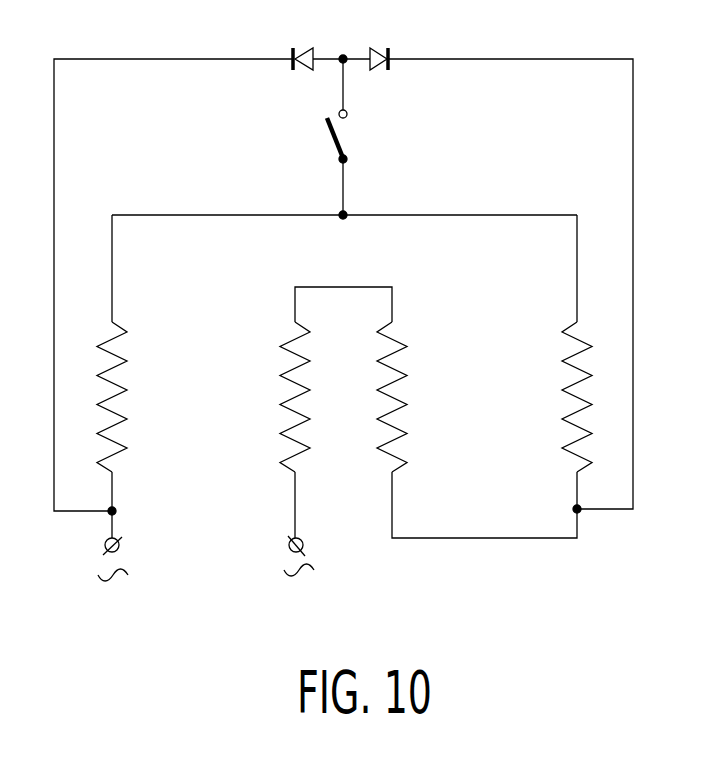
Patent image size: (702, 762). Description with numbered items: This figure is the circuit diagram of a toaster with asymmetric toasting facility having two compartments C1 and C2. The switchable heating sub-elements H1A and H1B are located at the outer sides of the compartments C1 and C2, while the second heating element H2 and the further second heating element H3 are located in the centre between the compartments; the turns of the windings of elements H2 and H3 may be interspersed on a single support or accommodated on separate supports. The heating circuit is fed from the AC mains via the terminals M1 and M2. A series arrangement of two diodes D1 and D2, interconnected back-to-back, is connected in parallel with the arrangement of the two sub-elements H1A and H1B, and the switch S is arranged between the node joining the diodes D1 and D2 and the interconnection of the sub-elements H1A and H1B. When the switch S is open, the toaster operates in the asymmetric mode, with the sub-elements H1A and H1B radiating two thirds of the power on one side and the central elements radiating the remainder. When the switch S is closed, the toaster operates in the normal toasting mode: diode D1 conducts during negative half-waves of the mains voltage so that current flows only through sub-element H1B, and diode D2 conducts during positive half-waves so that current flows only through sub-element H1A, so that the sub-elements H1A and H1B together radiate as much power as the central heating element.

The diode D1 is at (306, 47).
The diode D2 is at (384, 47).
The switch S is at (346, 133).
The sub-element H1A is at (118, 381).
The sub-element H1B is at (575, 378).
The second heating element H2 is at (395, 367).
The further second heating element H3 is at (292, 367).
The compartment C1 is at (497, 433).
The compartment C2 is at (216, 435).
The terminal M1 is at (120, 546).
The terminal M2 is at (288, 543).